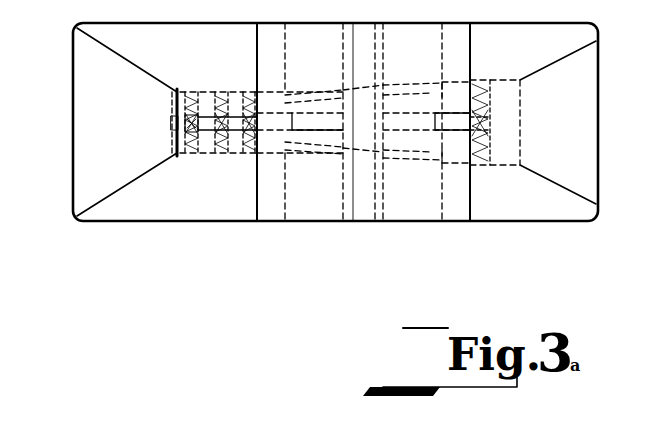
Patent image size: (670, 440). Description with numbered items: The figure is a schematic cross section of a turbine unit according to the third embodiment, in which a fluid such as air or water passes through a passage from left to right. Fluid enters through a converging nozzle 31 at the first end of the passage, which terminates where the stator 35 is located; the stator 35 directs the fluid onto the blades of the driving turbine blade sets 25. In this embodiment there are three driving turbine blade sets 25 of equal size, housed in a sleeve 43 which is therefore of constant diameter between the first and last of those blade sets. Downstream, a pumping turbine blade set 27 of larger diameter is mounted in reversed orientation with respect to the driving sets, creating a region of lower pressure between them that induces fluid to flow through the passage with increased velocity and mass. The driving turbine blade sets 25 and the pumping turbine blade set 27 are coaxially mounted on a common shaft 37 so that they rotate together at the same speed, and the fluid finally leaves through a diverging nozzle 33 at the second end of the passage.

The converging nozzle 31 is at (105, 48).
The diverging nozzle 33 is at (565, 58).
The stator 35 is at (175, 139).
The sleeve 43 is at (193, 153).
The driving turbine blade set 25 is at (250, 153).
The common shaft 37 is at (423, 123).
The pumping turbine blade set 27 is at (487, 153).